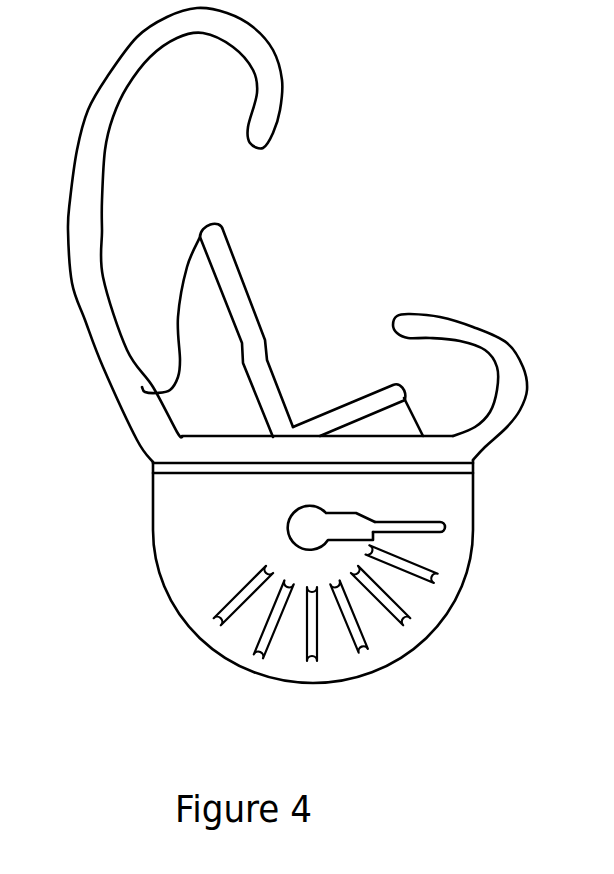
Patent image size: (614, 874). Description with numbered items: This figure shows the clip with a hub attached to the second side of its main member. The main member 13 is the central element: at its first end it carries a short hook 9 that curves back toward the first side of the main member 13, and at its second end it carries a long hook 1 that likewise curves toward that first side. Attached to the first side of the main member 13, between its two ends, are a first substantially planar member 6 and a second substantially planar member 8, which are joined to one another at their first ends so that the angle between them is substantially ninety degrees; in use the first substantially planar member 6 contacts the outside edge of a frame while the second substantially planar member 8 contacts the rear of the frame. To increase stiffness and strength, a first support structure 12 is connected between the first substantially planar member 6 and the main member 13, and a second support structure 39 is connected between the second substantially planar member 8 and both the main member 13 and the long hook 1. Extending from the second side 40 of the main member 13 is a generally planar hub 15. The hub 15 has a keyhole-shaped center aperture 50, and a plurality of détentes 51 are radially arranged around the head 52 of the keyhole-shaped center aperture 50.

The long hook 1 is at (133, 70).
The second support structure 39 is at (195, 312).
The second substantially planar member 8 is at (243, 303).
The first substantially planar member 6 is at (357, 403).
The first support structure 12 is at (397, 420).
The short hook 9 is at (517, 370).
The main member 13 is at (200, 448).
The second side of the main member 40 is at (413, 463).
The hub 15 is at (133, 594).
The head of the keyhole-shaped center aperture 52 is at (295, 522).
The keyhole-shaped center aperture 50 is at (356, 523).
The détentes 51 is at (216, 625).